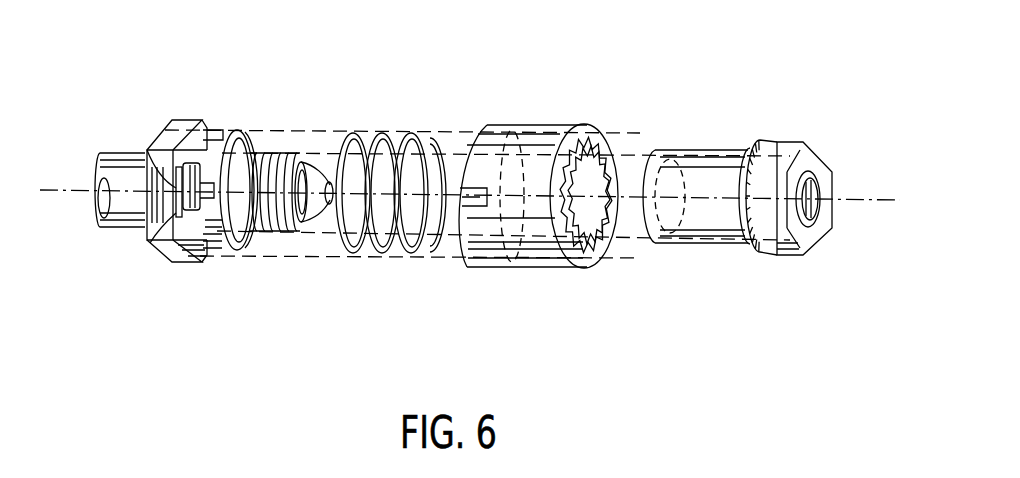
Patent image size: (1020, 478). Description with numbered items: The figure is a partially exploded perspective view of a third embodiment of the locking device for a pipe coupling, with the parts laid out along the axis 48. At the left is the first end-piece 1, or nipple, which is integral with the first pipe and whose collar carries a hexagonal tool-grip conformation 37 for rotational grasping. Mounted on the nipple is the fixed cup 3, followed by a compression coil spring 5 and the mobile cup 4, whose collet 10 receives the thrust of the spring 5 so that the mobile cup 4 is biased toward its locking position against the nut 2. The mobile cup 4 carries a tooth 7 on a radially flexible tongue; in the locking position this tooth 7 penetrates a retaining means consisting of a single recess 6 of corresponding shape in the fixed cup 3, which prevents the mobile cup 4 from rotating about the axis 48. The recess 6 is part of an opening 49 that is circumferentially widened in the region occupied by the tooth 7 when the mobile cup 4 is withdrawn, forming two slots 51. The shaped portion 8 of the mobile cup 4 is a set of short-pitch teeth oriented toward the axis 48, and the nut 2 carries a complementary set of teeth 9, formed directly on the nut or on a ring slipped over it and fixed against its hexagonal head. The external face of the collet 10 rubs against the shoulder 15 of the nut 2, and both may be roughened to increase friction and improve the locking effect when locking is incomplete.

The first end-piece 1 is at (156, 104).
The nut 2 is at (737, 183).
The fixed cup 3 is at (224, 150).
The mobile cup 4 is at (553, 183).
The compression coil spring 5 is at (394, 131).
The recess 6 is at (200, 165).
The tooth 7 is at (483, 205).
The shaped portion 8 is at (606, 158).
The complementary set of teeth 9 is at (766, 143).
The collet 10 is at (579, 256).
The shoulder 15 is at (750, 185).
The hexagonal tool-grip conformation 37 is at (178, 128).
The axis 48 is at (65, 192).
The opening 49 is at (150, 244).
The slots 51 is at (147, 150).